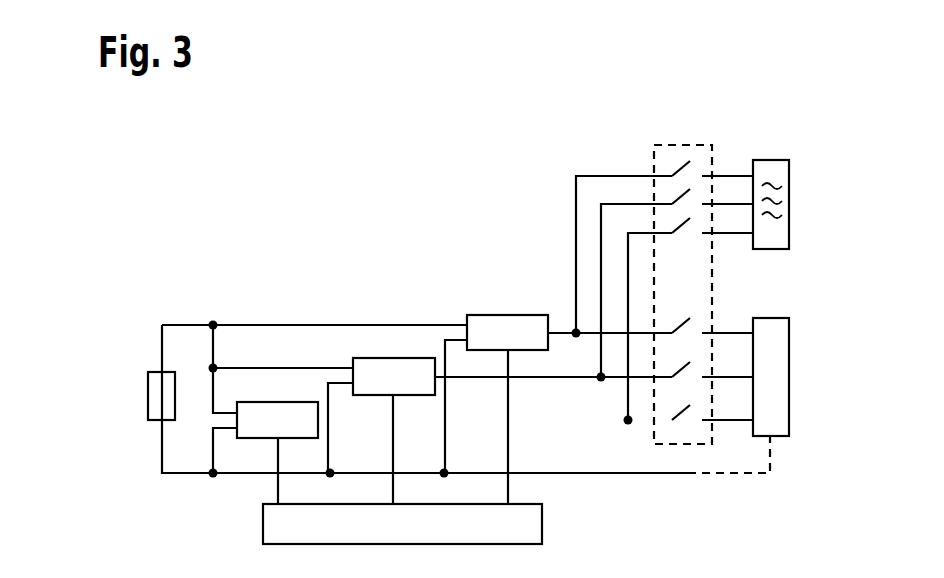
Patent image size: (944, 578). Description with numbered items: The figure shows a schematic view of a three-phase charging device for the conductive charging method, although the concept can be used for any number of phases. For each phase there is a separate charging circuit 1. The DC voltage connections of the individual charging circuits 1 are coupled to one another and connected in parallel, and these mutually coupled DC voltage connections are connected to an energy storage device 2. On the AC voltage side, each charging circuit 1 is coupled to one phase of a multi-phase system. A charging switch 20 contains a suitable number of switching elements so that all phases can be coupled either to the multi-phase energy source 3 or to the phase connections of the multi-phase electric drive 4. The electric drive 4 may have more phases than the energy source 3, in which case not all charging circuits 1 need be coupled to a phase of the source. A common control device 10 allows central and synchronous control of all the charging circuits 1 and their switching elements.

The charging circuit 1 is at (288, 402).
The energy storage device 2 is at (148, 396).
The multi-phase energy source 3 is at (789, 205).
The multi-phase electric drive 4 is at (789, 394).
The control device 10 is at (542, 524).
The charging switch 20 is at (692, 145).